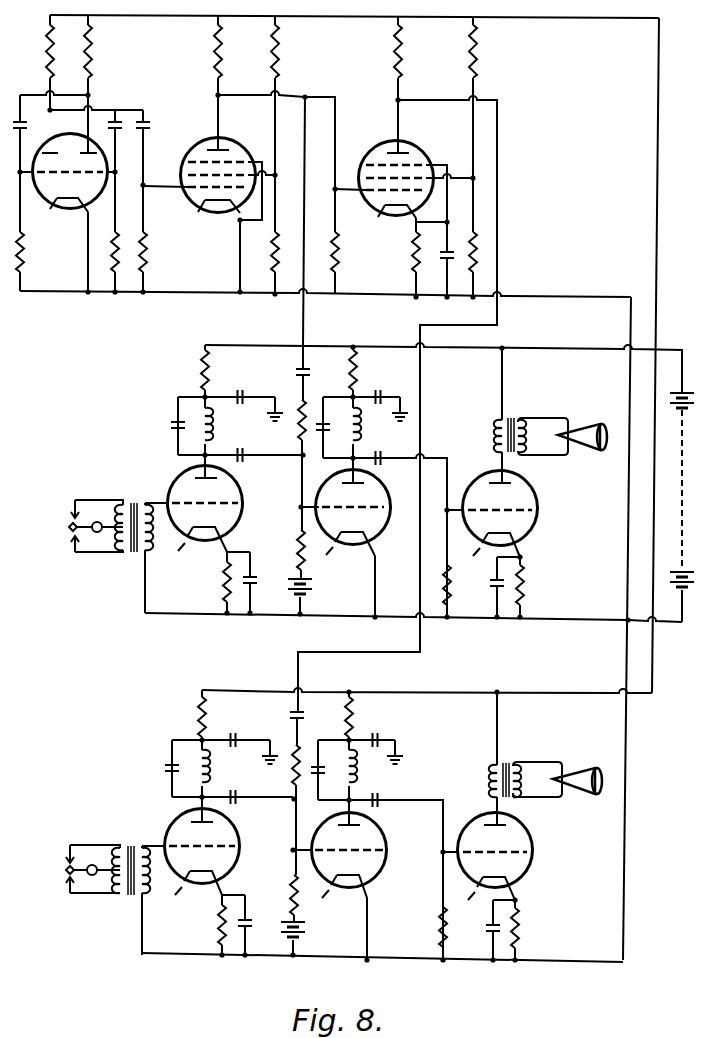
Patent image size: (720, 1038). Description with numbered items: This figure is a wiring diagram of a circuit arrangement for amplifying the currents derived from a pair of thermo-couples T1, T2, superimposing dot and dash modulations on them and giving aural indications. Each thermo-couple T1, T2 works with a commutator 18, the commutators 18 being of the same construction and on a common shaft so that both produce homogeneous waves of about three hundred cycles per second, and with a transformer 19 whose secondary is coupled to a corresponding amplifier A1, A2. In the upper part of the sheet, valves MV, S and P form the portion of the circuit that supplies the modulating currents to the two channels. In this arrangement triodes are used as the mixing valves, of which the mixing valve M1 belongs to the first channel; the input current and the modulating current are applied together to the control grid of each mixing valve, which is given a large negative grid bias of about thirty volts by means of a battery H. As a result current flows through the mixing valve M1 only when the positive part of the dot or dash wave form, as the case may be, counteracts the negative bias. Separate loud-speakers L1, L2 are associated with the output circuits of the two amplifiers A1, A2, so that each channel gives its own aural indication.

The master oscillator vacuum tube MV is at (52, 207).
The separator vacuum tube S is at (203, 208).
The power/phase vacuum tube P is at (383, 213).
The thermo-couple T1 is at (99, 522).
The thermo-couple T2 is at (91, 864).
The commutator 18 is at (69, 530).
The transformer 19 is at (133, 553).
The amplifier A1 is at (272, 605).
The amplifier A2 is at (270, 942).
The battery H is at (311, 594).
The mixing valve M1 is at (375, 533).
The loud-speaker L1 is at (583, 426).
The loud-speaker L2 is at (577, 771).